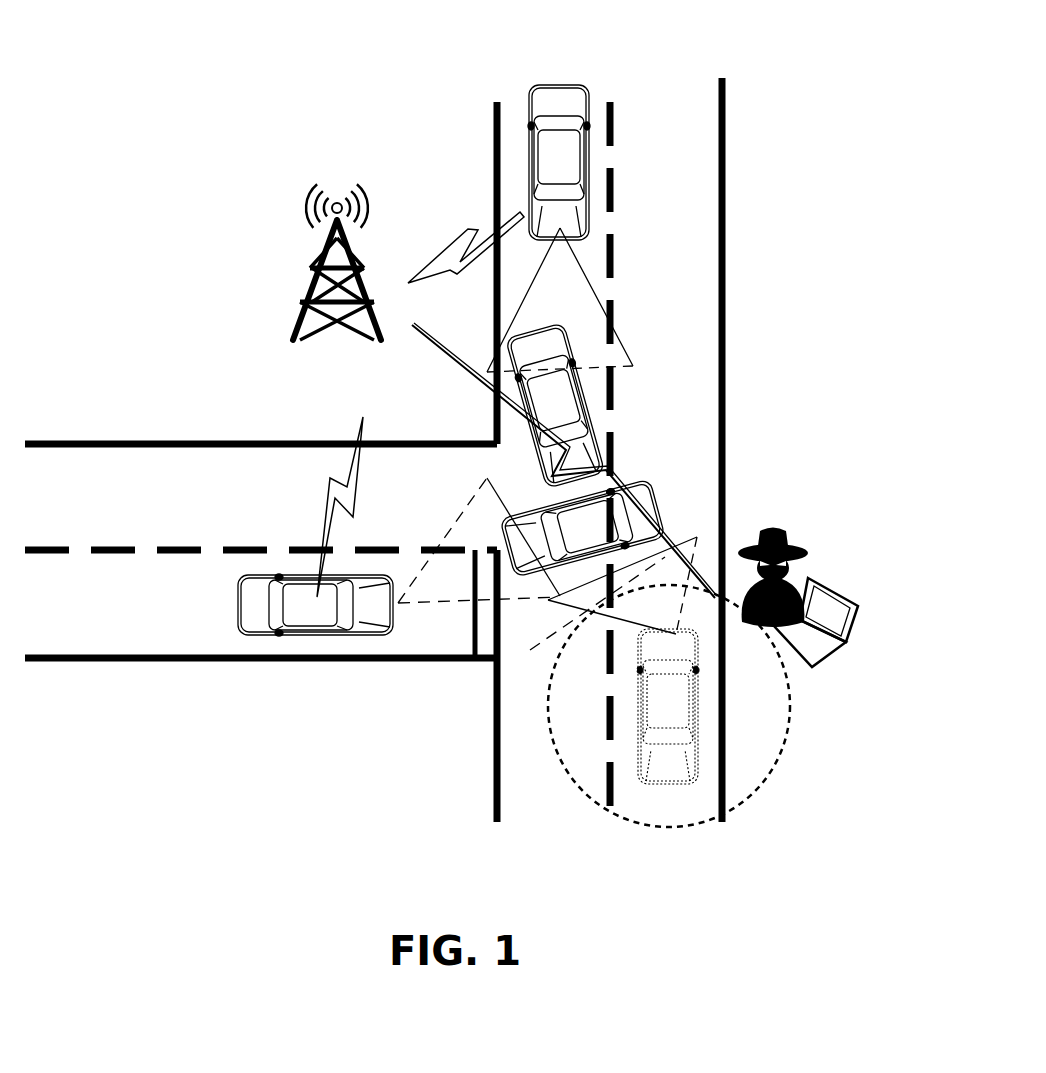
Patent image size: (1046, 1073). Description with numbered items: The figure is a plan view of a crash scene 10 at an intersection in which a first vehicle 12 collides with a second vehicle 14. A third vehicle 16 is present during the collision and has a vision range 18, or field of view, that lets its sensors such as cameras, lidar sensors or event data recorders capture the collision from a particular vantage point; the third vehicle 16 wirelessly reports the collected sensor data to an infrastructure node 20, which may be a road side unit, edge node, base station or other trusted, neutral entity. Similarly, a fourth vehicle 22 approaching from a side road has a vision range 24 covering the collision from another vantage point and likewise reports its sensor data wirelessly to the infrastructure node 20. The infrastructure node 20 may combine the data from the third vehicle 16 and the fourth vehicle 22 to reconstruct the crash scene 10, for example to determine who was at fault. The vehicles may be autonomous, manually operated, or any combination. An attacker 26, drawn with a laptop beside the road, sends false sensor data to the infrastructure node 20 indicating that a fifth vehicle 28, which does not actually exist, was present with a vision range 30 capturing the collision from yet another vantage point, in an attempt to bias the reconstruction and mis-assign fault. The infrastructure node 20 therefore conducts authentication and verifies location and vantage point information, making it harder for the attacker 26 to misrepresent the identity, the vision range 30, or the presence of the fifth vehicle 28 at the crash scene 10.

The crash scene 10 is at (406, 28).
The first vehicle 12 is at (593, 437).
The second vehicle 14 is at (667, 514).
The third vehicle 16 is at (570, 85).
The vision range 18 is at (632, 362).
The infrastructure node 20 is at (300, 312).
The fourth vehicle 22 is at (307, 635).
The vision range 24 is at (448, 605).
The attacker 26 is at (790, 536).
The fifth vehicle 28 is at (688, 745).
The vision range 30 is at (530, 652).